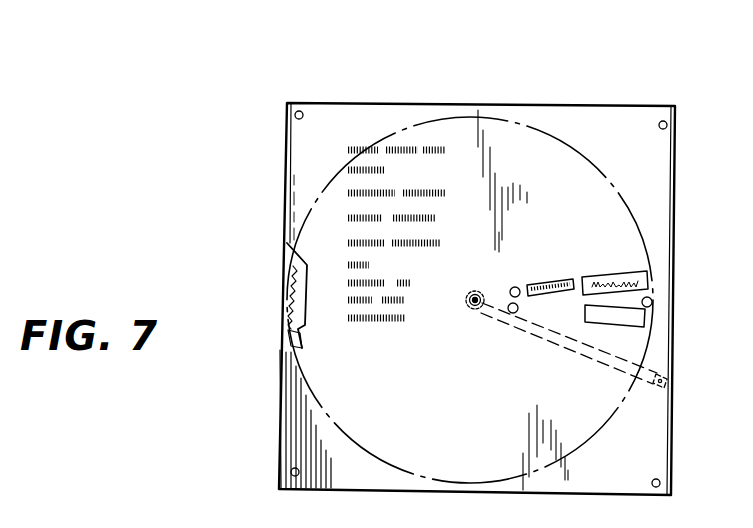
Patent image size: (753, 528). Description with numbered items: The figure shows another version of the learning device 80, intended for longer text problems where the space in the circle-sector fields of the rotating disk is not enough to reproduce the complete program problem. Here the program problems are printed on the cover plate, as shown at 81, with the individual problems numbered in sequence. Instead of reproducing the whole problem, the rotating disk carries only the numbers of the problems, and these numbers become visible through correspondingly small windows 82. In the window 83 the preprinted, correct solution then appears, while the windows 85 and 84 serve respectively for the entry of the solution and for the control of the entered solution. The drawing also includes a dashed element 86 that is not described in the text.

The device 80 is at (519, 104).
The printed program problems 81 is at (361, 191).
The small windows 82 is at (511, 305).
The window 83 is at (560, 282).
The window 84 is at (648, 273).
The window 85 is at (642, 317).
The pivoted pointer arm (phantom) 86 is at (590, 353).